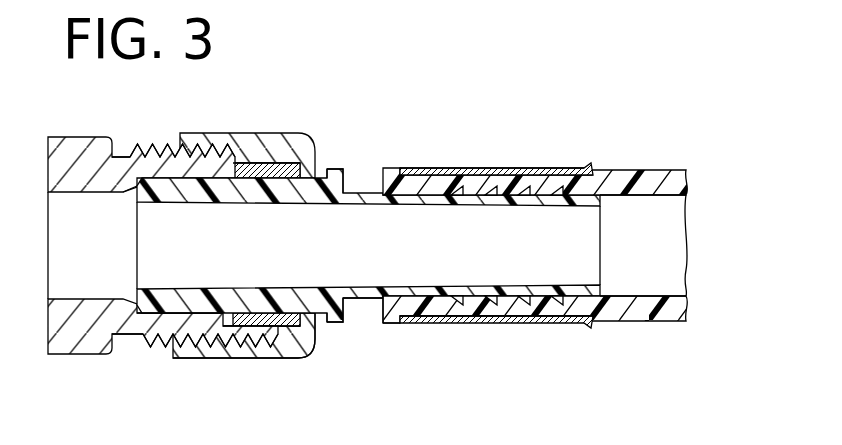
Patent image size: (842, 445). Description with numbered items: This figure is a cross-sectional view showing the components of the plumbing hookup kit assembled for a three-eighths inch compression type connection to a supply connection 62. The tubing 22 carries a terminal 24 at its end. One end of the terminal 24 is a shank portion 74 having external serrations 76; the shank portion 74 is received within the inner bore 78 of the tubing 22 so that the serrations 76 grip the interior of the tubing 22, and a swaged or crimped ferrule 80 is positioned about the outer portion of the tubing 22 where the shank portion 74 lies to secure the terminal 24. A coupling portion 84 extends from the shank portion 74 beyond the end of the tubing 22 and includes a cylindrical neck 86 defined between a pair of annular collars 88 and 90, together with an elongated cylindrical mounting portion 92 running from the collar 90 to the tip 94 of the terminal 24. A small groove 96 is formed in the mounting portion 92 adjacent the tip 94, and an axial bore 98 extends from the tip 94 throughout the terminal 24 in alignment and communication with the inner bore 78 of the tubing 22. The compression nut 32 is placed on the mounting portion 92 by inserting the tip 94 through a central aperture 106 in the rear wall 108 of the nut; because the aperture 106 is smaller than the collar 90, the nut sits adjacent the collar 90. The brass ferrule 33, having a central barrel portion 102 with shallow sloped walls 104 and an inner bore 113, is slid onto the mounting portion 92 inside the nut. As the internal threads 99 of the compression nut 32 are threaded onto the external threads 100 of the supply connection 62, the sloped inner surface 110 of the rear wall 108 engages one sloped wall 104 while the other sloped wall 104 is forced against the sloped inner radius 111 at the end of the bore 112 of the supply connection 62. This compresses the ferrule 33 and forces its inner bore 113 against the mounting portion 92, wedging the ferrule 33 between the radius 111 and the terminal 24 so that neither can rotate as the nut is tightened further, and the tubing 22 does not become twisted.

The supply connection 62 is at (119, 155).
The external threads 100 is at (118, 157).
The internal threads 99 is at (170, 144).
The sloped walls 104 is at (246, 158).
The central barrel portion 102 is at (260, 163).
The sloped inner surface 110 is at (323, 170).
The mounting portion 92 is at (338, 169).
The terminal 24 is at (382, 163).
The external serrations 76 is at (523, 170).
The ferrule 80 is at (540, 168).
The shank portion 74 is at (593, 196).
The tubing 22 is at (663, 170).
The inner bore 78 is at (657, 197).
The bore 112 is at (132, 193).
The inner bore 113 is at (268, 178).
The tip 94 is at (137, 297).
The axial bore 98 is at (592, 206).
The groove 96 is at (146, 319).
The compression nut 32 is at (180, 358).
The sloped inner radius 111 is at (218, 345).
The ferrule 33 is at (248, 358).
The rear wall 108 is at (318, 338).
The central aperture 106 is at (325, 322).
The collar 90 is at (353, 300).
The neck 86 is at (375, 332).
The coupling portion 84 is at (388, 322).
The collar 88 is at (396, 326).